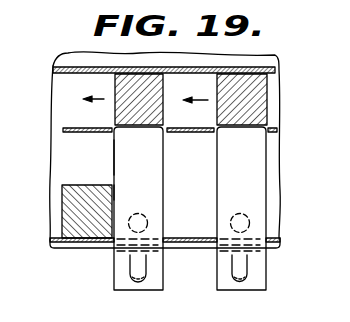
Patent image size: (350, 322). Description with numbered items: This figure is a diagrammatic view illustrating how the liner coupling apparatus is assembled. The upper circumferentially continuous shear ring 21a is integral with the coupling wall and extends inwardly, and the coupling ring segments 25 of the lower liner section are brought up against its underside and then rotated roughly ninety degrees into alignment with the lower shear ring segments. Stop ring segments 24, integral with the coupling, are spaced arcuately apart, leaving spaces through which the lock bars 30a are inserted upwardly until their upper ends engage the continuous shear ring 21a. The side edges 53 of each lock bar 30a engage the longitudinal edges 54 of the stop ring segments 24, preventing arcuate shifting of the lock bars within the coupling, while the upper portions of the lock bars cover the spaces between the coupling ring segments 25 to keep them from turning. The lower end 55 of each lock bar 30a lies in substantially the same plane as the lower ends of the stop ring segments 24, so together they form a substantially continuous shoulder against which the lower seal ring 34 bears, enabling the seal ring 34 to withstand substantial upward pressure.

The upper circumferentially continuous shear ring 21a is at (277, 64).
The coupling ring segments 25 is at (259, 97).
The lock bars 30a is at (258, 176).
The side edges 53 is at (112, 152).
The longitudinal edges 54 is at (113, 190).
The stop ring segments 24 is at (77, 212).
The lower seal ring 34 is at (68, 248).
The lower end 55 is at (124, 291).